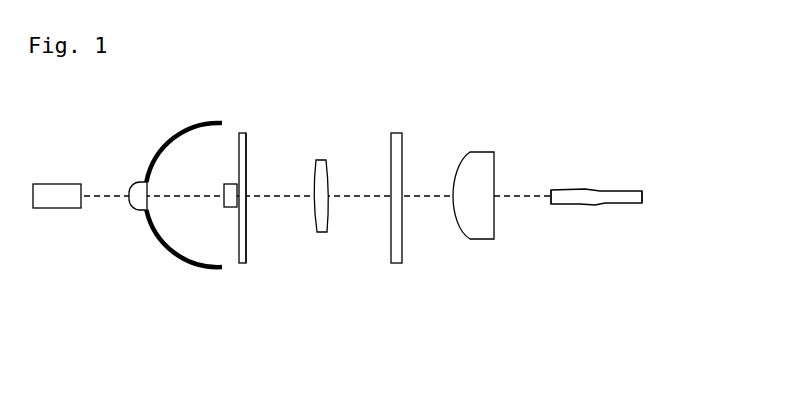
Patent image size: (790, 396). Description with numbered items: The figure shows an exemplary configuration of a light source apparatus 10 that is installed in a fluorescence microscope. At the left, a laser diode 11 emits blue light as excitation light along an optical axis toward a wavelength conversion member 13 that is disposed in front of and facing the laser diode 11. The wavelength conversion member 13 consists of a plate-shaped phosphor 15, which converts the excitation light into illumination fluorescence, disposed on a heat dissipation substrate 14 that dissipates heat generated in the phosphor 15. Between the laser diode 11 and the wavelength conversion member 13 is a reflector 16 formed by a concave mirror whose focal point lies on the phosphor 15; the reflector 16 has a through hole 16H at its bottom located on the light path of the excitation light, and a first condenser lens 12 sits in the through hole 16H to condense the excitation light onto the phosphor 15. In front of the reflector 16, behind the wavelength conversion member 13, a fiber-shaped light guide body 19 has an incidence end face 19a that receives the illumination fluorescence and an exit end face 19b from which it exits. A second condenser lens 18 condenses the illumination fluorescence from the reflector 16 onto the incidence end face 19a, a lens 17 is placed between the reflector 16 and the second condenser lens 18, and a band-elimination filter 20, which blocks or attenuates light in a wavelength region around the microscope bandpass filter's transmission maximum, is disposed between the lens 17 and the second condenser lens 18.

The light source apparatus 10 is at (422, 278).
The laser diode 11 is at (52, 182).
The first condenser lens 12 is at (141, 182).
The wavelength conversion member 13 is at (233, 257).
The heat dissipation substrate 14 is at (247, 155).
The plate-shaped phosphor 15 is at (228, 183).
The reflector 16 is at (178, 138).
The through hole 16H is at (143, 212).
The lens 17 is at (323, 159).
The second condenser lens 18 is at (478, 152).
The fiber-shaped light guide body 19 is at (588, 190).
The incidence end face 19a is at (550, 190).
The exit end face 19b is at (643, 190).
The band-elimination filter 20 is at (397, 133).